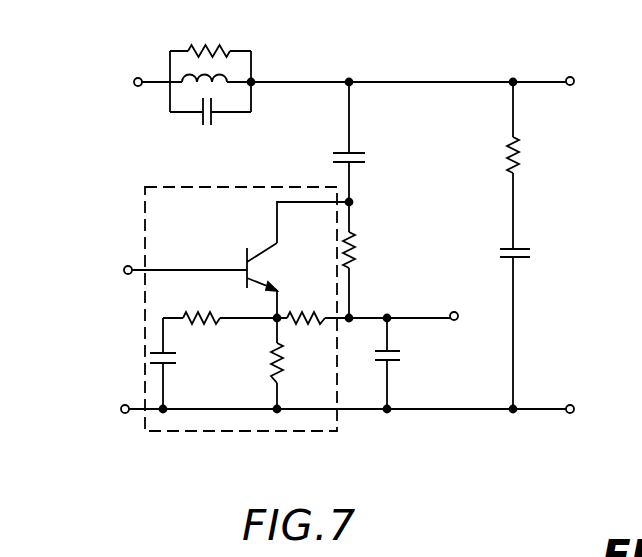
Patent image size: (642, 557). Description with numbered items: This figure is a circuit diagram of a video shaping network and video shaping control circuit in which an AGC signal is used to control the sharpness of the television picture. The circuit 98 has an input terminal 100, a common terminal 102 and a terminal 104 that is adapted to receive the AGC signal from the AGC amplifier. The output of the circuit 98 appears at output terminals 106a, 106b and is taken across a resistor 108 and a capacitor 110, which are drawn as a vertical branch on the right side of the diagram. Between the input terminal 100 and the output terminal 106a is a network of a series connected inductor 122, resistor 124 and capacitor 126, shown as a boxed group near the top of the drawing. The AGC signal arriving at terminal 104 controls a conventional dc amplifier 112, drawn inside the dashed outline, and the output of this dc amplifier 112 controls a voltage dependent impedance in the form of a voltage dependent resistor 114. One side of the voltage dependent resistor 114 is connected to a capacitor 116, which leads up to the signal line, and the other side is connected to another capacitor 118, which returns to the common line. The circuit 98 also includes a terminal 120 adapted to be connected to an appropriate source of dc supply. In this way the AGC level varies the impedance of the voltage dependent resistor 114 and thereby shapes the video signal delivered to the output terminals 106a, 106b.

The circuit 98 is at (433, 420).
The input terminal 100 is at (134, 82).
The common terminal 102 is at (118, 415).
The terminal 104 is at (123, 277).
The output terminal 106a is at (575, 83).
The output terminal 106b is at (590, 392).
The resistor 108 is at (520, 146).
The capacitor 110 is at (524, 259).
The dc amplifier 112 is at (197, 432).
The voltage dependent resistor 114 is at (356, 250).
The capacitor 116 is at (366, 158).
The capacitor 118 is at (402, 357).
The terminal 120 is at (451, 320).
The inductor 122 is at (228, 77).
The resistor 124 is at (212, 45).
The capacitor 126 is at (214, 121).